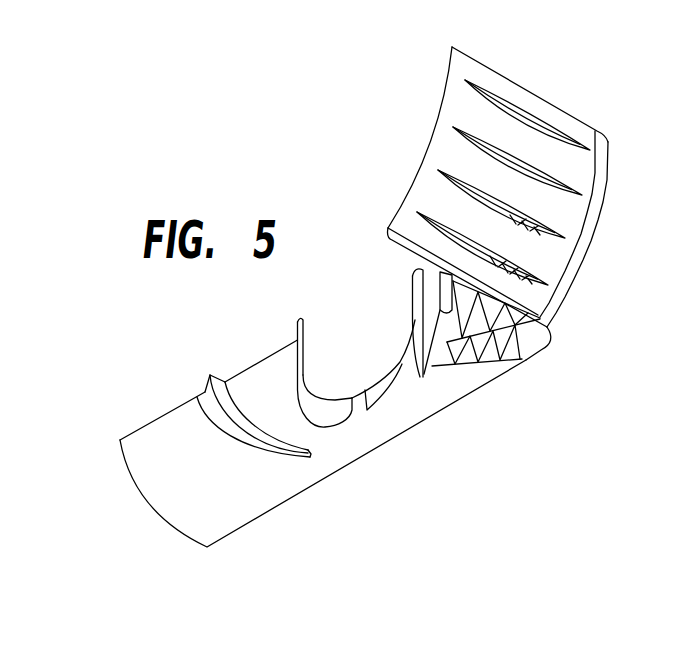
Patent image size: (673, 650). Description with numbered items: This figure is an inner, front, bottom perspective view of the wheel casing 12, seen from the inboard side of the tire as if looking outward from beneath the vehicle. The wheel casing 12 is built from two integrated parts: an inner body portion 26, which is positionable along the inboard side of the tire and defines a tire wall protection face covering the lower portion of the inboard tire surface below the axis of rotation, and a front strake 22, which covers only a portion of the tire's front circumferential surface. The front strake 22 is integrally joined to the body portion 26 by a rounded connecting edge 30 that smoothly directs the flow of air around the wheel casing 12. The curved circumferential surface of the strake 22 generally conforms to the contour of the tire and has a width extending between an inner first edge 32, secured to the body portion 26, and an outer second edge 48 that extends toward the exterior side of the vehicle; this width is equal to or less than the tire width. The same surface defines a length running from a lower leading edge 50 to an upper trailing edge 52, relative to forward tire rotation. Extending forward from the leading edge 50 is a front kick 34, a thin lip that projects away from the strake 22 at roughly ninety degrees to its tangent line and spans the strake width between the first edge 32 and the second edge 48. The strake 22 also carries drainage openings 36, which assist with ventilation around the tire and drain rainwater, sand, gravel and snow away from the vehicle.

The wheel casing 12 is at (583, 72).
The front strake 22 is at (440, 147).
The body portion 26 is at (372, 442).
The rounded connecting edge 30 is at (577, 230).
The first edge 32 is at (553, 275).
The front kick 34 is at (408, 247).
The drainage opening 36 is at (548, 132).
The second edge 48 is at (390, 227).
The leading edge 50 is at (513, 300).
The trailing edge 52 is at (507, 82).